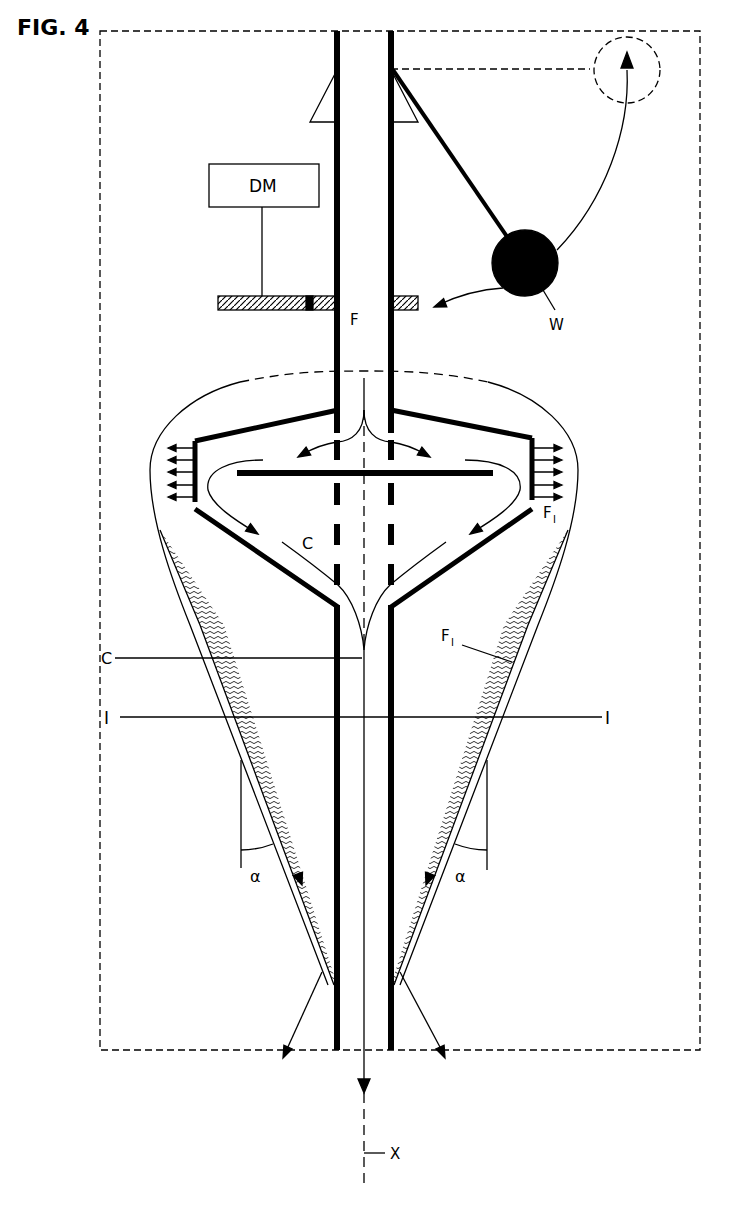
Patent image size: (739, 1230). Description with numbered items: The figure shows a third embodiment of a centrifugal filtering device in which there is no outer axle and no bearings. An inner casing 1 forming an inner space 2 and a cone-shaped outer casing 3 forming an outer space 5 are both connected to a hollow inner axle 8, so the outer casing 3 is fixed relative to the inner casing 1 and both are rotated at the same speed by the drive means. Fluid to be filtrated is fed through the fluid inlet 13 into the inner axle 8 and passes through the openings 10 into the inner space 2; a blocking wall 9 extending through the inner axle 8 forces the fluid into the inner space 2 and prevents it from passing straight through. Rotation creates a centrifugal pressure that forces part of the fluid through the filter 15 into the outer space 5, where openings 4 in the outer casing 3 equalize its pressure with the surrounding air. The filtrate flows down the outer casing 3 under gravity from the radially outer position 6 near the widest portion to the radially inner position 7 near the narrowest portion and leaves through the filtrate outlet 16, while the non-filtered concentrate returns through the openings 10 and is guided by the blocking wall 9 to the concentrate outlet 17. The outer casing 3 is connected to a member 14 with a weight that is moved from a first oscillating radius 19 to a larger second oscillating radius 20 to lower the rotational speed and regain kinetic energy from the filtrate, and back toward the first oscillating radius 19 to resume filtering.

The inner casing 1 is at (493, 430).
The inner space 2 is at (508, 445).
The outer casing 3 is at (547, 621).
The openings 4 is at (432, 372).
The outer space 5 is at (508, 560).
The radially outer position 6 is at (568, 458).
The radially inner position 7 is at (407, 942).
The inner axle 8 is at (394, 273).
The blocking wall 9 is at (433, 472).
The openings 10 is at (332, 430).
The fluid inlet 13 is at (366, 366).
The member 14 is at (598, 222).
The filter 15 is at (195, 442).
The filtrate outlet 16 is at (371, 1032).
The concentrate outlet 17 is at (374, 1132).
The first oscillating radius 19 is at (468, 290).
The second oscillating radius 20 is at (536, 70).